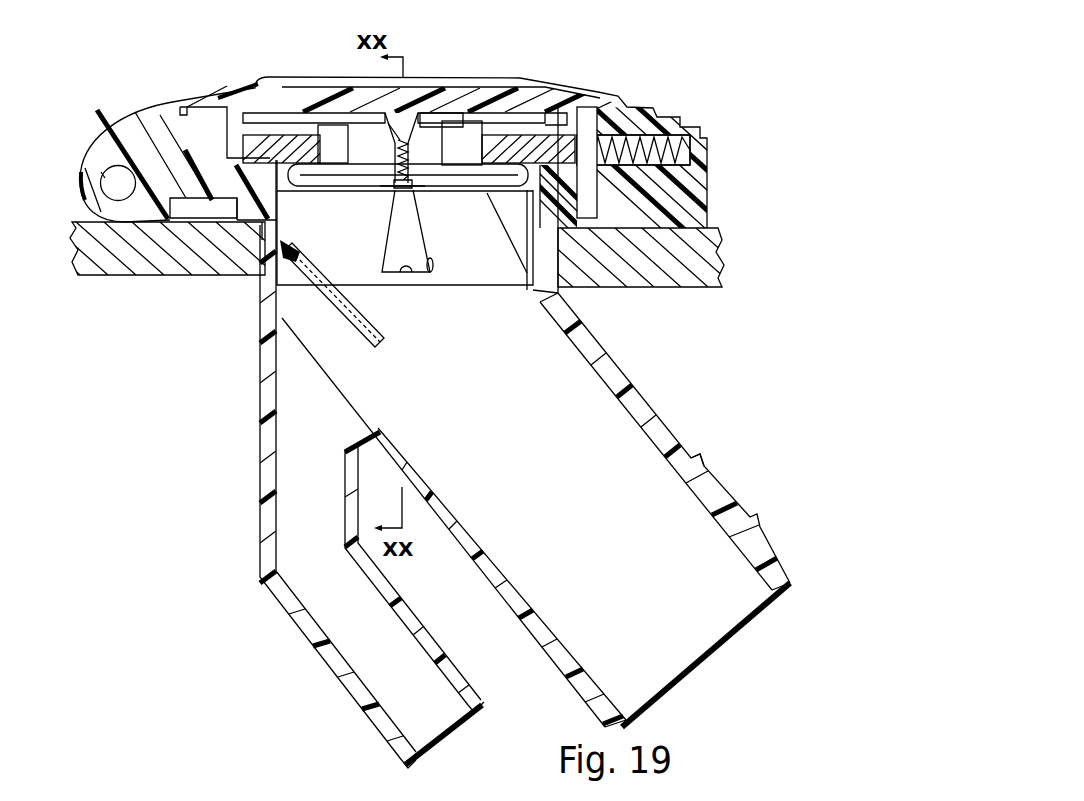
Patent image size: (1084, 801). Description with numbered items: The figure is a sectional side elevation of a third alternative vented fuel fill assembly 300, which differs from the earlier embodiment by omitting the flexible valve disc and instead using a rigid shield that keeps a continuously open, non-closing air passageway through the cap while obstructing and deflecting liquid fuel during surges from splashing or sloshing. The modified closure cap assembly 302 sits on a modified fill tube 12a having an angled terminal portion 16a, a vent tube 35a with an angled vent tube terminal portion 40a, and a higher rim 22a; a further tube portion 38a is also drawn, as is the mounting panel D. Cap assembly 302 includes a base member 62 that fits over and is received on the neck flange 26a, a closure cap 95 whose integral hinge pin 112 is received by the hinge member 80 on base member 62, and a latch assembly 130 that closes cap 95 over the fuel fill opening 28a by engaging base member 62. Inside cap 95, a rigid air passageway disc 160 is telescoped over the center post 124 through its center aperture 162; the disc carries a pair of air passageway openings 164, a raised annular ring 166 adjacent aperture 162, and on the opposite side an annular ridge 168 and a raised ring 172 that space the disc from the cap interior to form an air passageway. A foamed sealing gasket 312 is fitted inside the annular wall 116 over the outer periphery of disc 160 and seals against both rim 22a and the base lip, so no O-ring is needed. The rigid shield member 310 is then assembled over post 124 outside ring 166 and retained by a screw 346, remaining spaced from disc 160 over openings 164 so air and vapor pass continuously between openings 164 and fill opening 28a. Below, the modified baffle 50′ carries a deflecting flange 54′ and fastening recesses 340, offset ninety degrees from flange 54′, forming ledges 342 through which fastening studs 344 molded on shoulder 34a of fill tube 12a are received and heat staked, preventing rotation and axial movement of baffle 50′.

The vented fuel fill assembly 300 is at (702, 106).
The closure cap assembly 302 is at (614, 88).
The latch assembly 130 is at (712, 131).
The annular ridge 168 is at (585, 107).
The sealing gasket 312 is at (530, 150).
The annular wall 116 is at (232, 134).
The closure cap 95 is at (227, 86).
The hinge member 80 is at (113, 167).
The hinge pin 112 is at (106, 170).
The base member 62 is at (200, 195).
The door panel D is at (722, 268).
The air passageway disc 160 is at (282, 138).
The air passageway openings 164 is at (331, 128).
The raised ring 172 is at (443, 117).
The center aperture 162 is at (400, 132).
The screw 346 is at (397, 186).
The rigid shield member 310 is at (460, 186).
The raised annular ring 166 is at (392, 178).
The fastening recesses 340 is at (432, 262).
The fastening studs 344 is at (398, 266).
The center post 124 is at (434, 263).
The rim 22a is at (522, 195).
The shoulder 34a is at (352, 285).
The ledges 342 is at (404, 286).
The baffle 50′ is at (514, 273).
The neck flange 26a is at (262, 222).
The fuel fill opening 28a is at (262, 282).
The vent tube 35a is at (305, 638).
The vent tube terminal portion 40a is at (373, 708).
The deflecting flange 54′ is at (356, 346).
The flexible arm 38a is at (362, 438).
The fill tube 12a is at (652, 402).
The angled terminal portion 16a is at (668, 440).